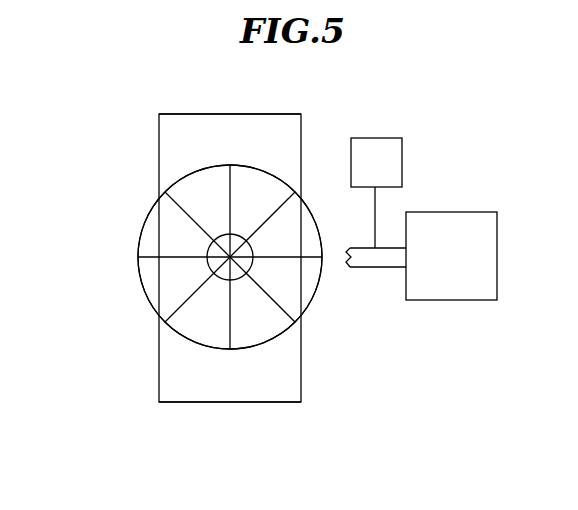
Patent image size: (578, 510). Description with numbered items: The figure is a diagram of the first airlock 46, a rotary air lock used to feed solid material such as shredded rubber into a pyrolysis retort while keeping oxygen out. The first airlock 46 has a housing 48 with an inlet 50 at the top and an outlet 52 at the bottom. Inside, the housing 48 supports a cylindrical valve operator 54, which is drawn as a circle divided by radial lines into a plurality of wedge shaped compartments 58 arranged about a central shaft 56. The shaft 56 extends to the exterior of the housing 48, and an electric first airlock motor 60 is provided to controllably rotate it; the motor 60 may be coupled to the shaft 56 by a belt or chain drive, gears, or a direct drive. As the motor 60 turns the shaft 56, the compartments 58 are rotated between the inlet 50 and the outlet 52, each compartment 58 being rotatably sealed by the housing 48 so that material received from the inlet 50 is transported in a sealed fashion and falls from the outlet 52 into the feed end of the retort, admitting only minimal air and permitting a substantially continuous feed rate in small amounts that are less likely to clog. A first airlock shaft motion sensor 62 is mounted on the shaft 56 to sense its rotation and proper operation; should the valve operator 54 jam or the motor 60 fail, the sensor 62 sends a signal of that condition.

The first airlock 46 is at (125, 178).
The housing 48 is at (301, 129).
The inlet 50 is at (182, 92).
The outlet 52 is at (180, 409).
The valve operator 54 is at (168, 258).
The shaft 56 is at (230, 257).
The wedge shaped compartments 58 is at (166, 230).
The first airlock motor 60 is at (497, 250).
The first airlock shaft motion sensor 62 is at (402, 160).